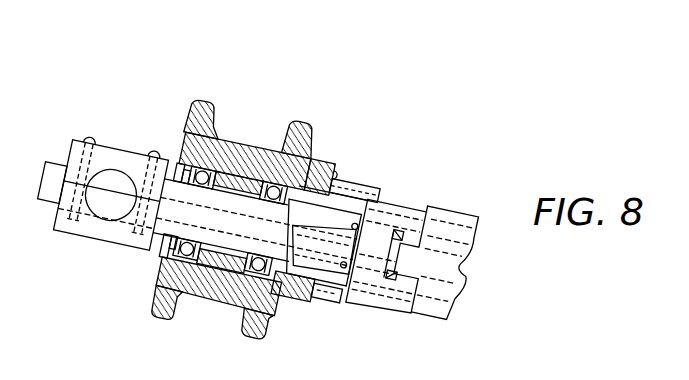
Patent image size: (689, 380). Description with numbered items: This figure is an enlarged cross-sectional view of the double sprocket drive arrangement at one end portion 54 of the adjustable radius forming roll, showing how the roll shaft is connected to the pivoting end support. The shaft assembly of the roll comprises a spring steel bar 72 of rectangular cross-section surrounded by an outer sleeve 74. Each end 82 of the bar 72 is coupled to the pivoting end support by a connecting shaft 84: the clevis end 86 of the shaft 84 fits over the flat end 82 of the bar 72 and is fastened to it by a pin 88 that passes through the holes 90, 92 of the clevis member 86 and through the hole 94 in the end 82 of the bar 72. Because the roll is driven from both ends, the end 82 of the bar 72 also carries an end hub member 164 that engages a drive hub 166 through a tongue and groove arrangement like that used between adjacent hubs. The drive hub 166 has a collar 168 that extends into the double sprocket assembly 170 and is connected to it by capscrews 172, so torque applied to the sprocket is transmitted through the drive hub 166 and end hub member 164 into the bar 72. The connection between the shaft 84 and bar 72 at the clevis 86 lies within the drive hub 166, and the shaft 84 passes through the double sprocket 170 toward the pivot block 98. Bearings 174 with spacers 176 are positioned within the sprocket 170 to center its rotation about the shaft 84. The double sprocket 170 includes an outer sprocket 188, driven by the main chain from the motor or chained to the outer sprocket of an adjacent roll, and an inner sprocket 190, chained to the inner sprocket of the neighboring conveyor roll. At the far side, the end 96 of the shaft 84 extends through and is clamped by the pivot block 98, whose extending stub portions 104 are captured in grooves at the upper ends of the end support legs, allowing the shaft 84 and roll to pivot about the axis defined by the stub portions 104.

The end portion 54 is at (48, 157).
The stub portion 104 is at (110, 170).
The pivot block 98 is at (57, 222).
The end of shaft 96 is at (83, 233).
The double sprocket assembly 170 is at (220, 145).
The drive hub 166 is at (314, 158).
The bearings 174 is at (172, 262).
The outer sprocket 188 is at (198, 102).
The inner sprocket 190 is at (304, 125).
The spacers 176 is at (205, 290).
The collar 168 is at (248, 296).
The connecting shaft 84 is at (262, 197).
The hole 94 is at (252, 214).
The hole 92 is at (252, 238).
The capscrews 172 is at (338, 172).
The clevis end 86 is at (320, 298).
The end of bar 82 is at (313, 240).
The hole 90 is at (312, 202).
The pin 88 is at (335, 206).
The end hub member 164 is at (440, 212).
The outer sleeve 74 is at (478, 252).
The bar 72 is at (457, 272).